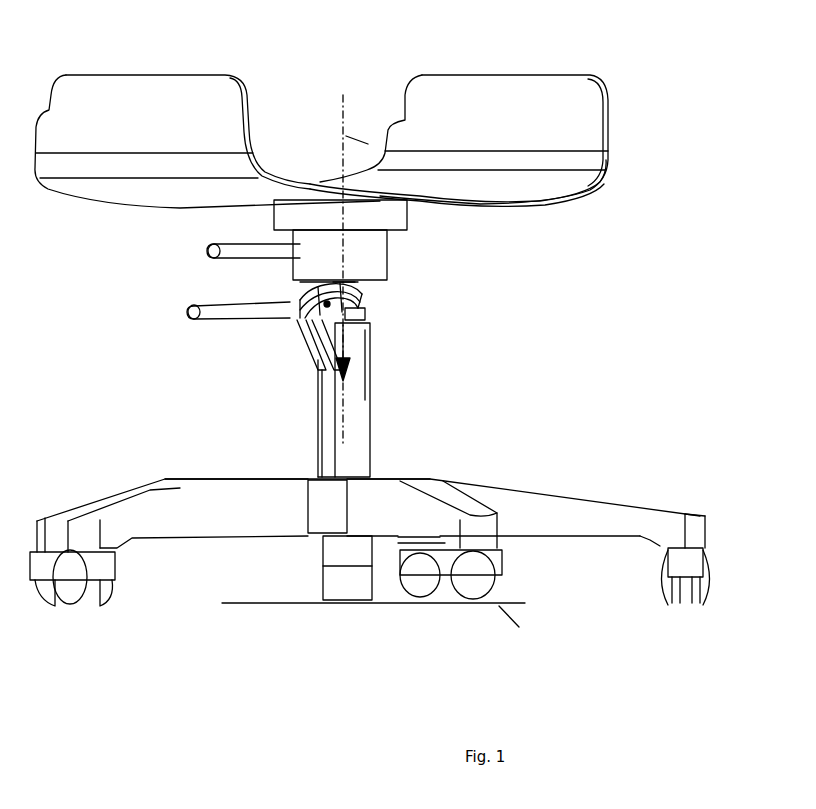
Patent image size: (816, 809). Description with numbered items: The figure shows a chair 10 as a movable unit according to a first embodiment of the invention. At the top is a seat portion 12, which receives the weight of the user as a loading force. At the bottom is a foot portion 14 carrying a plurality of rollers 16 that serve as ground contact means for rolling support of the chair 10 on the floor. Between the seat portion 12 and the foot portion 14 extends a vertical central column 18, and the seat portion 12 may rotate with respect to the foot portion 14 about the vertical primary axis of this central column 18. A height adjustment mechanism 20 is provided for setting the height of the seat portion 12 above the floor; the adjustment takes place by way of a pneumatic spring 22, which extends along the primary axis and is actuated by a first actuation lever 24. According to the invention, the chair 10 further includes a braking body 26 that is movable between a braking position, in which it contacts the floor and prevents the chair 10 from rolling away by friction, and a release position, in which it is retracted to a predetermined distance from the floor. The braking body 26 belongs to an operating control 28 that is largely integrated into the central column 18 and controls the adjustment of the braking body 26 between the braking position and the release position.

The chair 10 is at (118, 47).
The seat portion 12 is at (302, 178).
The foot portion 14 is at (553, 488).
The rollers 16 is at (663, 591).
The central column 18 is at (356, 442).
The height adjustment mechanism 20 is at (194, 256).
The pneumatic spring 22 is at (366, 289).
The first actuation lever 24 is at (212, 247).
The braking body 26 is at (348, 606).
The operating control 28 is at (378, 378).